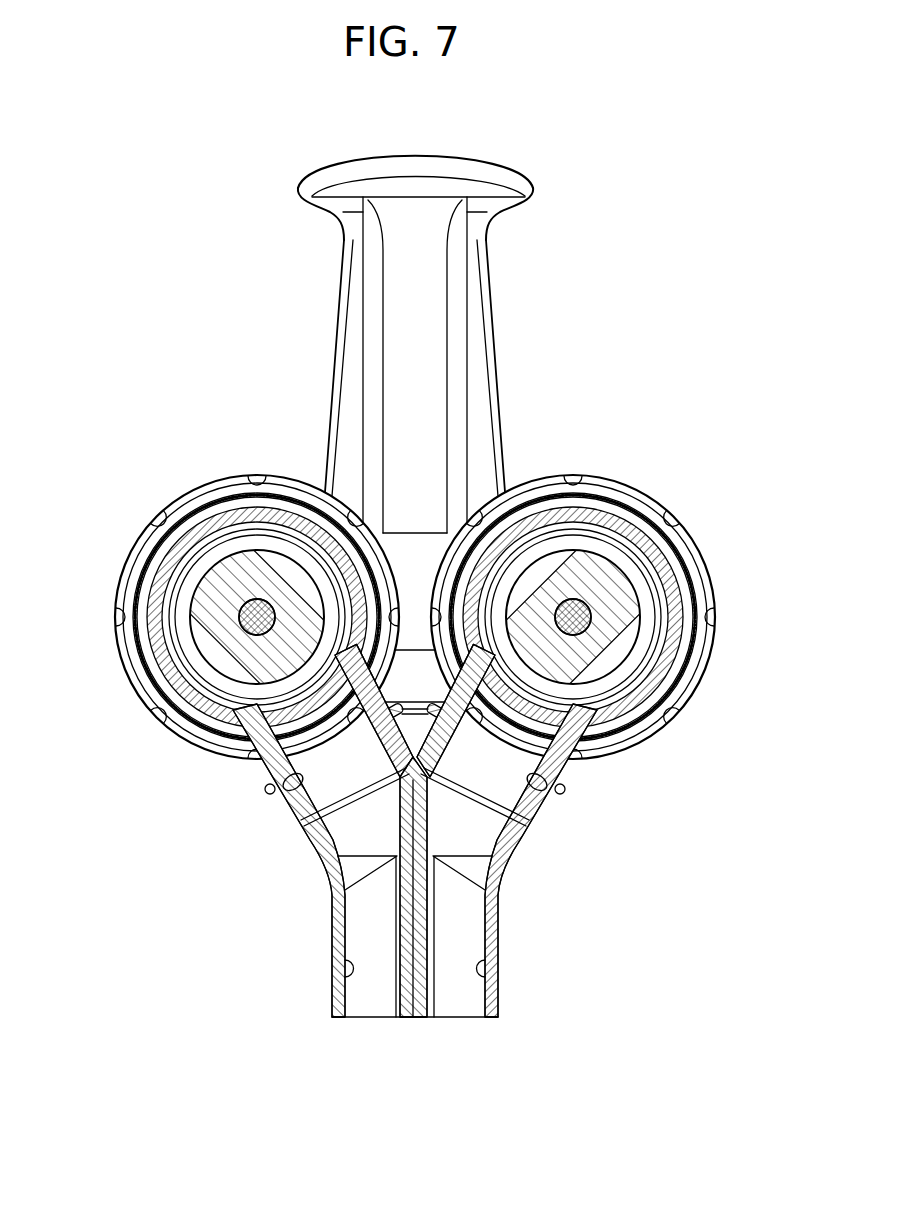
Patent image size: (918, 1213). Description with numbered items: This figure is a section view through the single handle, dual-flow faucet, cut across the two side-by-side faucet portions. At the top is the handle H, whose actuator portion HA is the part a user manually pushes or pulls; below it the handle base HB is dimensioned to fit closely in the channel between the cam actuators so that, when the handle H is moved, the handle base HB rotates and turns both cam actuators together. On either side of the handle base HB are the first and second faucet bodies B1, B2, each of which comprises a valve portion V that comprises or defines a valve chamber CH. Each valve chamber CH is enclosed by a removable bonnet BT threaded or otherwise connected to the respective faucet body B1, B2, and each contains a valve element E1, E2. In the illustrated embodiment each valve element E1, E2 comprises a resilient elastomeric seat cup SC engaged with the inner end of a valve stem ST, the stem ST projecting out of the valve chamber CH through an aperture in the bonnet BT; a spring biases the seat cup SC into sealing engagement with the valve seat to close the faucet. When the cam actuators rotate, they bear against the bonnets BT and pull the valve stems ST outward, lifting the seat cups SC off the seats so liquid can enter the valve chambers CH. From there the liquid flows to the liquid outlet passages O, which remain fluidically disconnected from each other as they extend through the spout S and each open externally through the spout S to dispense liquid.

The actuator portion HA is at (492, 224).
The handle H is at (435, 369).
The handle base HB is at (434, 693).
The valve stem ST is at (217, 585).
The valve portion V is at (153, 575).
The first faucet body B1 is at (667, 650).
The second faucet body B2 is at (178, 685).
The valve chamber CH is at (258, 536).
The seat cup SC is at (245, 560).
The first valve element E1 is at (552, 666).
The second valve element E2 is at (299, 662).
The bonnet BT is at (208, 745).
The spout S is at (509, 871).
The liquid outlet passage O is at (278, 800).